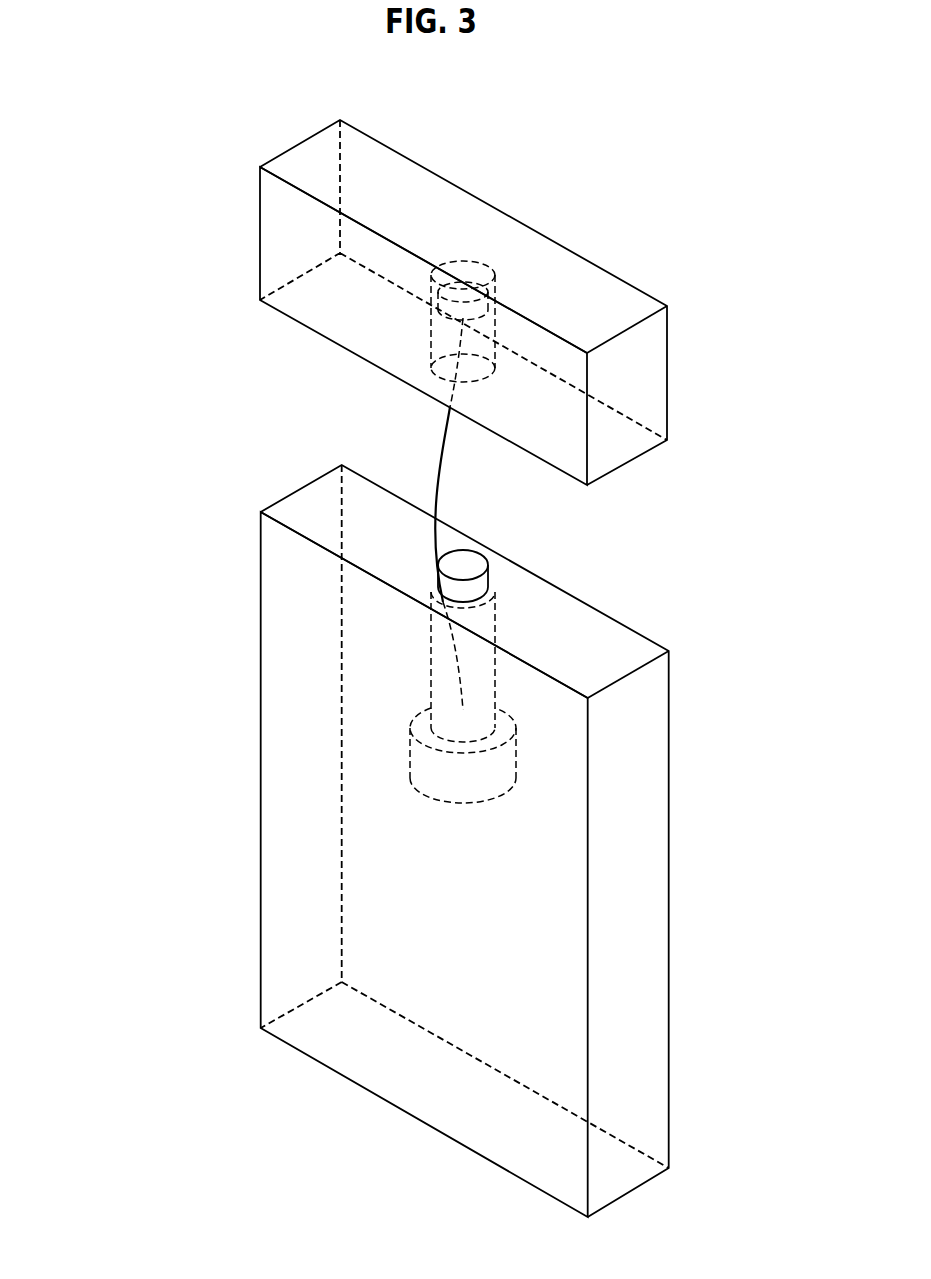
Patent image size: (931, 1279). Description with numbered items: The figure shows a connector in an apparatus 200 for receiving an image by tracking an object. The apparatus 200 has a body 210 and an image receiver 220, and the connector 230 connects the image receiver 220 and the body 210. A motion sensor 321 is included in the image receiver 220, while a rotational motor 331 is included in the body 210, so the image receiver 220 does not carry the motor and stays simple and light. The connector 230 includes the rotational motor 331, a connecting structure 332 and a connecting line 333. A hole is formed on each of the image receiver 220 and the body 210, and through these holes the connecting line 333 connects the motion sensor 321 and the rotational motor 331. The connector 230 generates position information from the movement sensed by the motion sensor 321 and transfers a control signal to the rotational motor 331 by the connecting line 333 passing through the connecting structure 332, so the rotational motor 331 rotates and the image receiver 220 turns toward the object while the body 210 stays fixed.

The apparatus 200 is at (460, 99).
The body 210 is at (667, 747).
The image receiver 220 is at (533, 302).
The connector 230 is at (283, 560).
The motion sensor 321 is at (468, 282).
The rotational motor 331 is at (325, 697).
The connecting structure 332 is at (463, 565).
The connecting line 333 is at (436, 462).